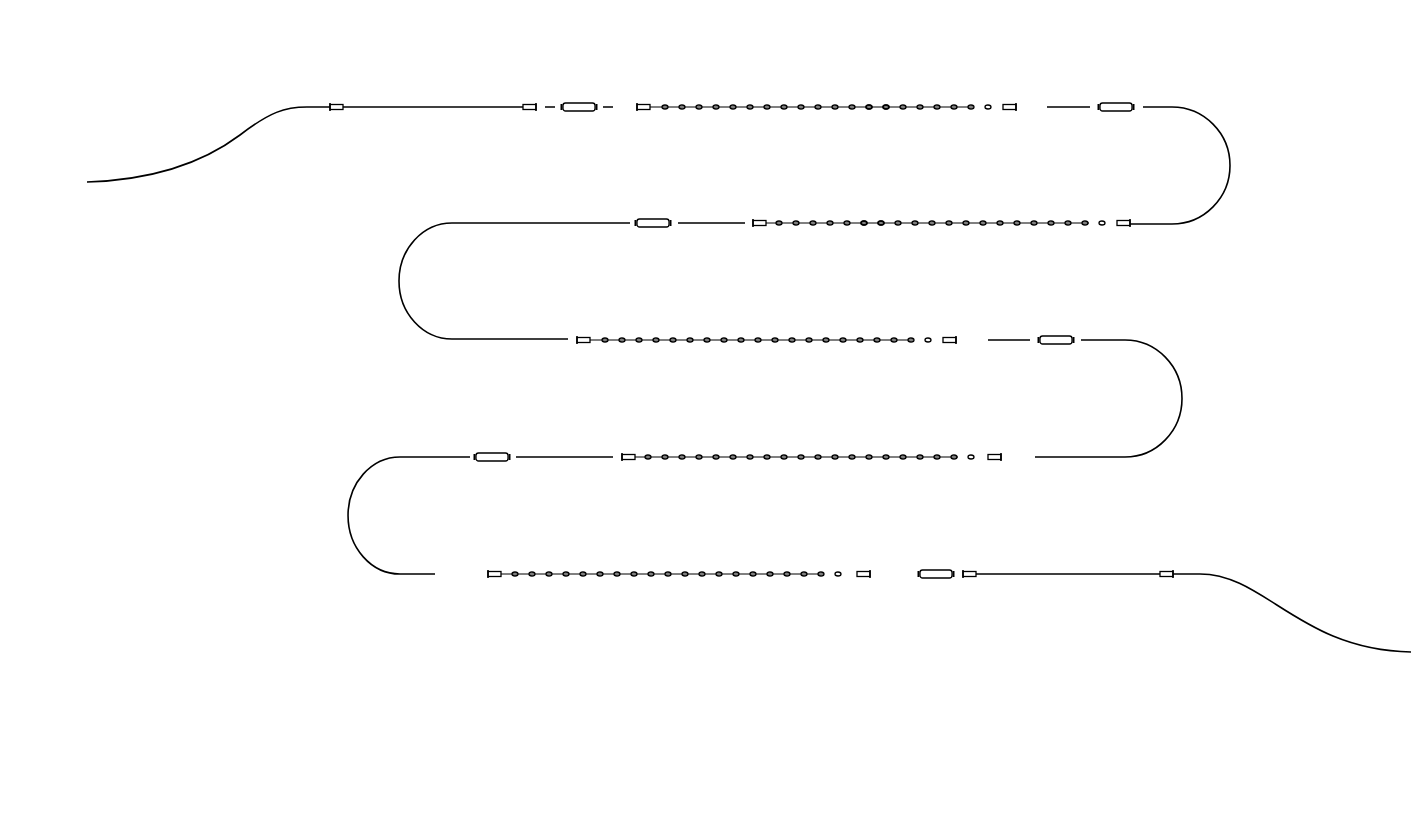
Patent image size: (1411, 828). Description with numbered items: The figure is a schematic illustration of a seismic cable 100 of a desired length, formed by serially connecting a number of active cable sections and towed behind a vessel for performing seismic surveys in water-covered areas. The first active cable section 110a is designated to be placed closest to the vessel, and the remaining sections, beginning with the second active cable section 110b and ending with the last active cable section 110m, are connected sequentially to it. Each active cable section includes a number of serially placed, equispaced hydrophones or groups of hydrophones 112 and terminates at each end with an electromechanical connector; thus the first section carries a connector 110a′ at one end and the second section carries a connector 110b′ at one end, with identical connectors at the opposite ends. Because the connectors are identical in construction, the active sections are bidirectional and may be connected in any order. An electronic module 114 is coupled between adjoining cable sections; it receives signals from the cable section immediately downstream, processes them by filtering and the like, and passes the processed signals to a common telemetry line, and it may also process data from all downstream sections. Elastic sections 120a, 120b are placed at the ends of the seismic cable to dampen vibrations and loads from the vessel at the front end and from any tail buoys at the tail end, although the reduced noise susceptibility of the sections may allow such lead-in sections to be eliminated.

The seismic cable 100 is at (809, 46).
The first active cable section 110a is at (760, 105).
The connector 110a′ is at (641, 105).
The second active cable section 110b is at (959, 223).
The connector 110b′ is at (758, 227).
The last active cable section 110m is at (765, 573).
The hydrophones 112 is at (870, 106).
The electronic module 114 is at (581, 110).
The elastic section 120a is at (470, 107).
The elastic section 120b is at (237, 135).